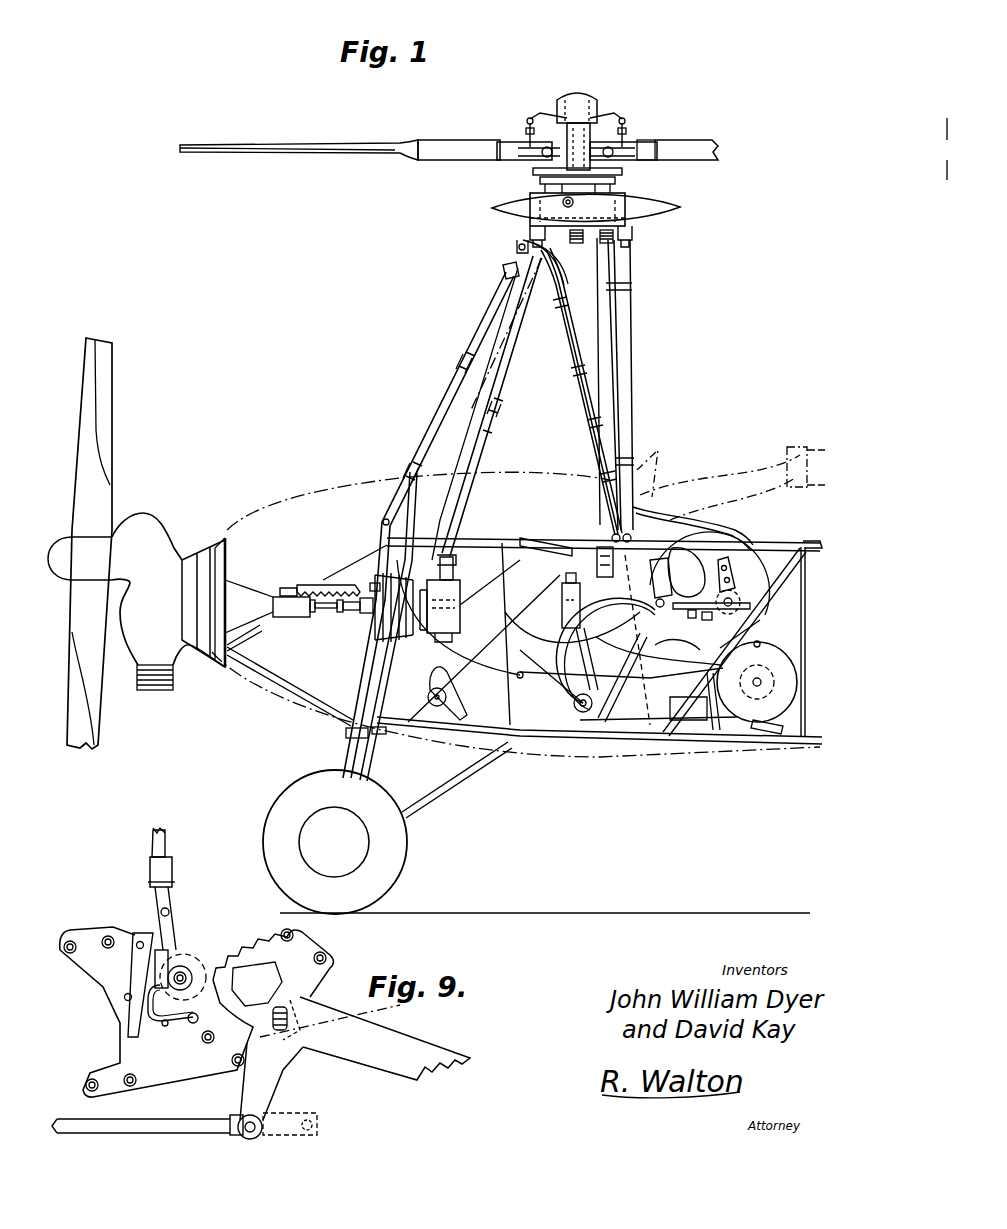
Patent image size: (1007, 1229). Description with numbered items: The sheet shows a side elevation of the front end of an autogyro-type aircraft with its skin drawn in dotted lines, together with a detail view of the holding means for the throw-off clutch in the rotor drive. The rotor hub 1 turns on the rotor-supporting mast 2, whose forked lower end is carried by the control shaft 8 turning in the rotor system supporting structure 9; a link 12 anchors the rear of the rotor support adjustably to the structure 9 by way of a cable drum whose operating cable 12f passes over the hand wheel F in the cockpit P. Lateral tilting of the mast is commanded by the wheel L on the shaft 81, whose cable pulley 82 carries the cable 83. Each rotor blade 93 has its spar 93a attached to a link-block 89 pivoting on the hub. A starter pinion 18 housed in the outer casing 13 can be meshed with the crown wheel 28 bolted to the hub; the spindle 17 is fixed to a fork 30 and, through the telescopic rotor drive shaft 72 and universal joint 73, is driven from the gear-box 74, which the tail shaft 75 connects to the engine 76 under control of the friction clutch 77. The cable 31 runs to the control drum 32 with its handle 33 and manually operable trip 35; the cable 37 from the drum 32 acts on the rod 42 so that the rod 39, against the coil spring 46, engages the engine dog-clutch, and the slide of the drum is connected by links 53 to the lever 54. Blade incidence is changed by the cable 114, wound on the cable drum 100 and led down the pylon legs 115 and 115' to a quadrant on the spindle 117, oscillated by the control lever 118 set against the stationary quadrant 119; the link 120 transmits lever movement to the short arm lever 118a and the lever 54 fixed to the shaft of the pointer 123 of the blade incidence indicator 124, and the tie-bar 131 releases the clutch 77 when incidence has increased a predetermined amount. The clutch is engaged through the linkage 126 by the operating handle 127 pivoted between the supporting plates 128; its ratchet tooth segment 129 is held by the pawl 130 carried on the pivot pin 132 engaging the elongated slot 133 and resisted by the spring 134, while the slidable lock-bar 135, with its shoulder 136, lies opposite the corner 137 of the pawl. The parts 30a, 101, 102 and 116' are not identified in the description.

In FIG. 1, the rotor hub 1 is at (598, 118).
In FIG. 1, the rotor-supporting mast 2 is at (545, 117).
In FIG. 1, the control shaft 8 is at (563, 200).
In FIG. 1, the rotor system supporting structure 9 is at (612, 210).
In FIG. 1, the link 12 is at (633, 232).
In FIG. 1, the operating cable 12f is at (614, 393).
In FIG. 1, the hollow outer casing 13 is at (495, 210).
In FIG. 1, the spindle 17 is at (528, 233).
In FIG. 1, the starter pinion 18 is at (533, 172).
In FIG. 1, the crown wheel 28 is at (618, 180).
In FIG. 1, the fork 30 is at (517, 247).
In FIG. 1, the strut fitting 30a is at (505, 270).
In FIG. 1, the cable 31 is at (535, 283).
In FIG. 1, the control drum 32 is at (730, 592).
In FIG. 1, the handle 33 is at (728, 570).
In FIG. 1, the manually operable trip 35 is at (708, 621).
In FIG. 1, the cable 37 is at (470, 605).
In FIG. 1, the rod 39 is at (318, 584).
In FIG. 1, the rod 42 is at (374, 583).
In FIG. 1, the coil spring 46 is at (290, 586).
In FIG. 1, the links 53 is at (692, 615).
In FIG. 1, the lever 54 is at (690, 602).
In FIG. 1, the telescopic rotor drive shaft 72 is at (501, 393).
In FIG. 1, the universal joint 73 is at (440, 566).
In FIG. 1, the gear-box 74 is at (455, 626).
In FIG. 1, the output tail shaft 75 is at (325, 610).
In FIG. 1, the engine 76 is at (160, 542).
In FIG. 1, the friction clutch 77 is at (392, 605).
In FIG. 1, the shaft 81 is at (540, 543).
In FIG. 1, the cable pulley 82 is at (600, 547).
In FIG. 1, the cable 83 is at (598, 328).
In FIG. 1, the link-block 89 is at (640, 150).
In FIG. 1, the rotor blades 93 is at (335, 143).
In FIG. 1, the rotor blade spars 93a is at (470, 143).
In FIG. 1, the cable drum 100 is at (578, 246).
In FIG. 1, the hub cap 101 is at (600, 102).
In FIG. 1, the link arm 102 is at (548, 112).
In FIG. 1, the cable 114 is at (570, 312).
In FIG. 1, the leg 115 is at (428, 526).
In FIG. 1, the leg 115' is at (576, 391).
In FIG. 1, the band 116' is at (594, 654).
In FIG. 1, the rotatable spindle 117 is at (583, 712).
In FIG. 1, the control lever 118 is at (562, 592).
In FIG. 1, the short arm lever 118a is at (590, 715).
In FIG. 1, the stationary quadrant 119 is at (547, 647).
In FIG. 1, the link 120 is at (604, 697).
In FIG. 1, the pointer 123 is at (660, 555).
In FIG. 1, the blade incidence indicator 124 is at (705, 565).
In FIG. 1, the linkage 126 is at (470, 716).
In FIG. 9, the linkage 126 is at (145, 1120).
In FIG. 1, the operating handle 127 is at (752, 730).
In FIG. 9, the operating handle 127 is at (372, 1055).
In FIG. 1, the supporting plates 128 is at (672, 722).
In FIG. 9, the supporting plates 128 is at (310, 985).
In FIG. 9, the ratchet tooth segment 129 is at (247, 945).
In FIG. 9, the pawl 130 is at (185, 950).
In FIG. 1, the tie-bar 131 is at (655, 647).
In FIG. 9, the tie-bar 131 is at (168, 833).
In FIG. 9, the pivot pin 132 is at (160, 1020).
In FIG. 9, the elongated slot 133 is at (186, 972).
In FIG. 9, the spring 134 is at (190, 1024).
In FIG. 9, the slidable lock-bar 135 is at (158, 905).
In FIG. 9, the shoulder 136 is at (150, 935).
In FIG. 9, the corner 137 is at (176, 958).
In FIG. 1, the hand wheel F is at (790, 675).
In FIG. 1, the wheel L is at (694, 566).
In FIG. 1, the cockpit P is at (662, 492).